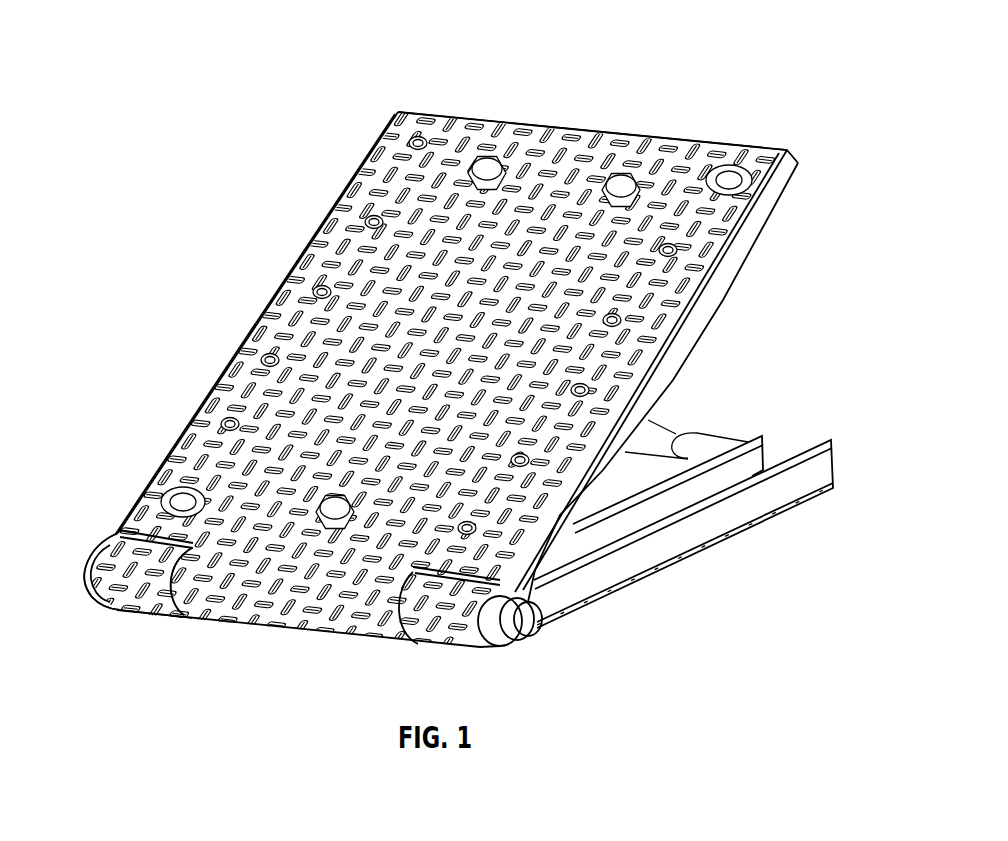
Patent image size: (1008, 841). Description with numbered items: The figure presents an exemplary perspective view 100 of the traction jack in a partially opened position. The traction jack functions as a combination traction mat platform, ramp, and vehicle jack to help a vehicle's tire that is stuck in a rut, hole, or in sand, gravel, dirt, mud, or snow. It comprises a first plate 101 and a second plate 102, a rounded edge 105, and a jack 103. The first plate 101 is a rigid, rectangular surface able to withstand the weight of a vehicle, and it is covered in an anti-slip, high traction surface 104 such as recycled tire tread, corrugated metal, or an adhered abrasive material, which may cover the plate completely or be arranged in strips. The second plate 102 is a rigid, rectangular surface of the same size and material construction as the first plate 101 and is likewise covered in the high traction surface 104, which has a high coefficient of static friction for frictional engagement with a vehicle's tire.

The perspective view 100 is at (773, 63).
The first plate 101 is at (400, 137).
The second plate 102 is at (756, 516).
The jack 103 is at (657, 433).
The high traction surface 104 is at (402, 107).
The rounded edge 105 is at (113, 587).